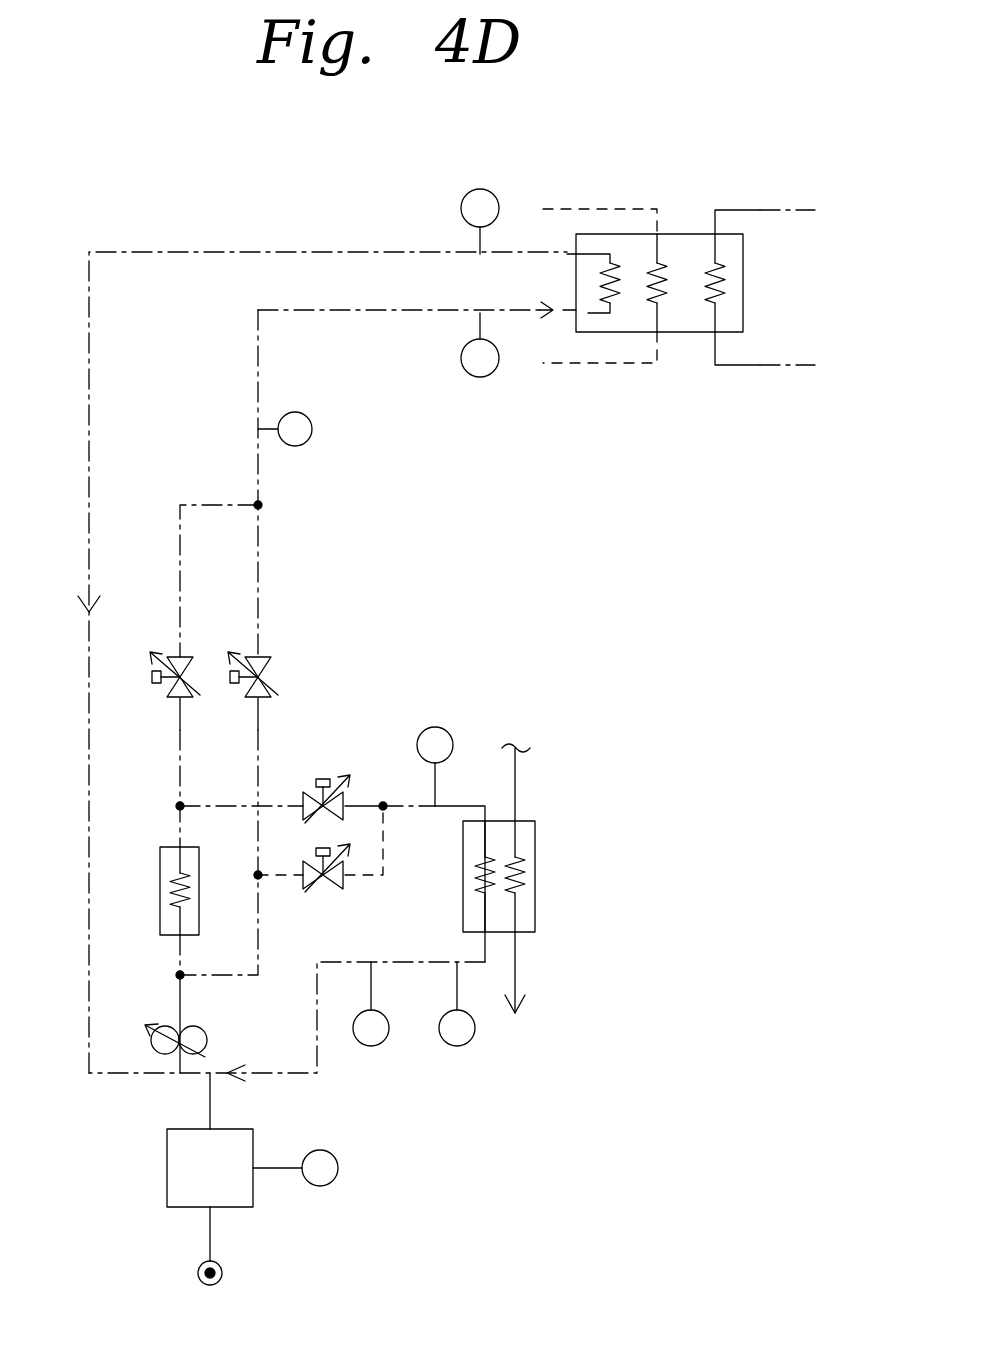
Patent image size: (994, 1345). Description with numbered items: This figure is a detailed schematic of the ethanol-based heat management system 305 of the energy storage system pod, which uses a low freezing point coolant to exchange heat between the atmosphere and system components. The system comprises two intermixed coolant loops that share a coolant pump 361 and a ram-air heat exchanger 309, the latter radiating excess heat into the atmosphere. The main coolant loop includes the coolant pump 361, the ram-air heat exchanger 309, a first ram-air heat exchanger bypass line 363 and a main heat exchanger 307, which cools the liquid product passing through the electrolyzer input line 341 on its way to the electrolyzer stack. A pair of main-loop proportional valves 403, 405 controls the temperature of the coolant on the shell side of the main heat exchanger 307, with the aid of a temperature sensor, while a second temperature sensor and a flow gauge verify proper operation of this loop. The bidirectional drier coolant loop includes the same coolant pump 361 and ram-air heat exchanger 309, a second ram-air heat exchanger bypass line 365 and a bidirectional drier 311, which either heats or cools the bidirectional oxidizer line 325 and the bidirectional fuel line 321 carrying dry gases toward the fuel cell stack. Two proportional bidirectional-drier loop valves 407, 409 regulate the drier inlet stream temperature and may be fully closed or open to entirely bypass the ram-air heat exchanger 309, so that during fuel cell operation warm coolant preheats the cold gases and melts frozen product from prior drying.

The heat management system 305 is at (667, 637).
The main heat exchanger 307 is at (535, 855).
The ram-air heat exchanger 309 is at (160, 878).
The bidirectional drier 311 is at (680, 262).
The bidirectional fuel line 321 is at (745, 210).
The bidirectional oxidizer line 325 is at (600, 209).
The electrolyzer input line 341 is at (518, 777).
The coolant pump 361 is at (199, 1030).
The first ram-air heat exchanger bypass line 363 is at (383, 850).
The second ram-air heat exchanger bypass line 365 is at (258, 730).
The main-loop proportional valve 403 is at (340, 775).
The main-loop proportional valve 405 is at (335, 888).
The bidirectional-drier loop valve 407 is at (172, 657).
The bidirectional-drier loop valve 409 is at (250, 657).